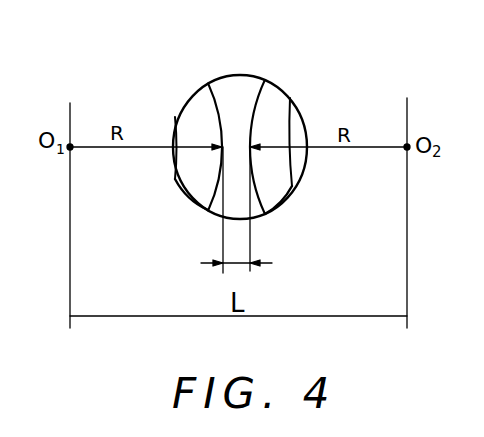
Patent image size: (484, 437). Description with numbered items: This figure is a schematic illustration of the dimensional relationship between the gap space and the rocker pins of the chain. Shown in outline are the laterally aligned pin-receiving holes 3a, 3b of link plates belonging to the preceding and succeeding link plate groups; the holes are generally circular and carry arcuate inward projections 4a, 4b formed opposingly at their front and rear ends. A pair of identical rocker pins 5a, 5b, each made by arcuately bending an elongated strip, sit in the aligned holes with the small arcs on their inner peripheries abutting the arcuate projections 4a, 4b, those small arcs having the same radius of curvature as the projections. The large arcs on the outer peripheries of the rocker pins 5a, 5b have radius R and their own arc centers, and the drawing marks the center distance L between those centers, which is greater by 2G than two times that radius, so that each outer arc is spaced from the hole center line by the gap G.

The front pin-receiving hole 3a is at (243, 88).
The rear pin-receiving hole 3b is at (262, 85).
The arcuate inward projection 4a is at (180, 138).
The arcuate inward projection 4b is at (291, 126).
The rocker pin 5a is at (197, 190).
The rocker pin 5b is at (275, 198).
The twice the gap space 2G is at (242, 263).